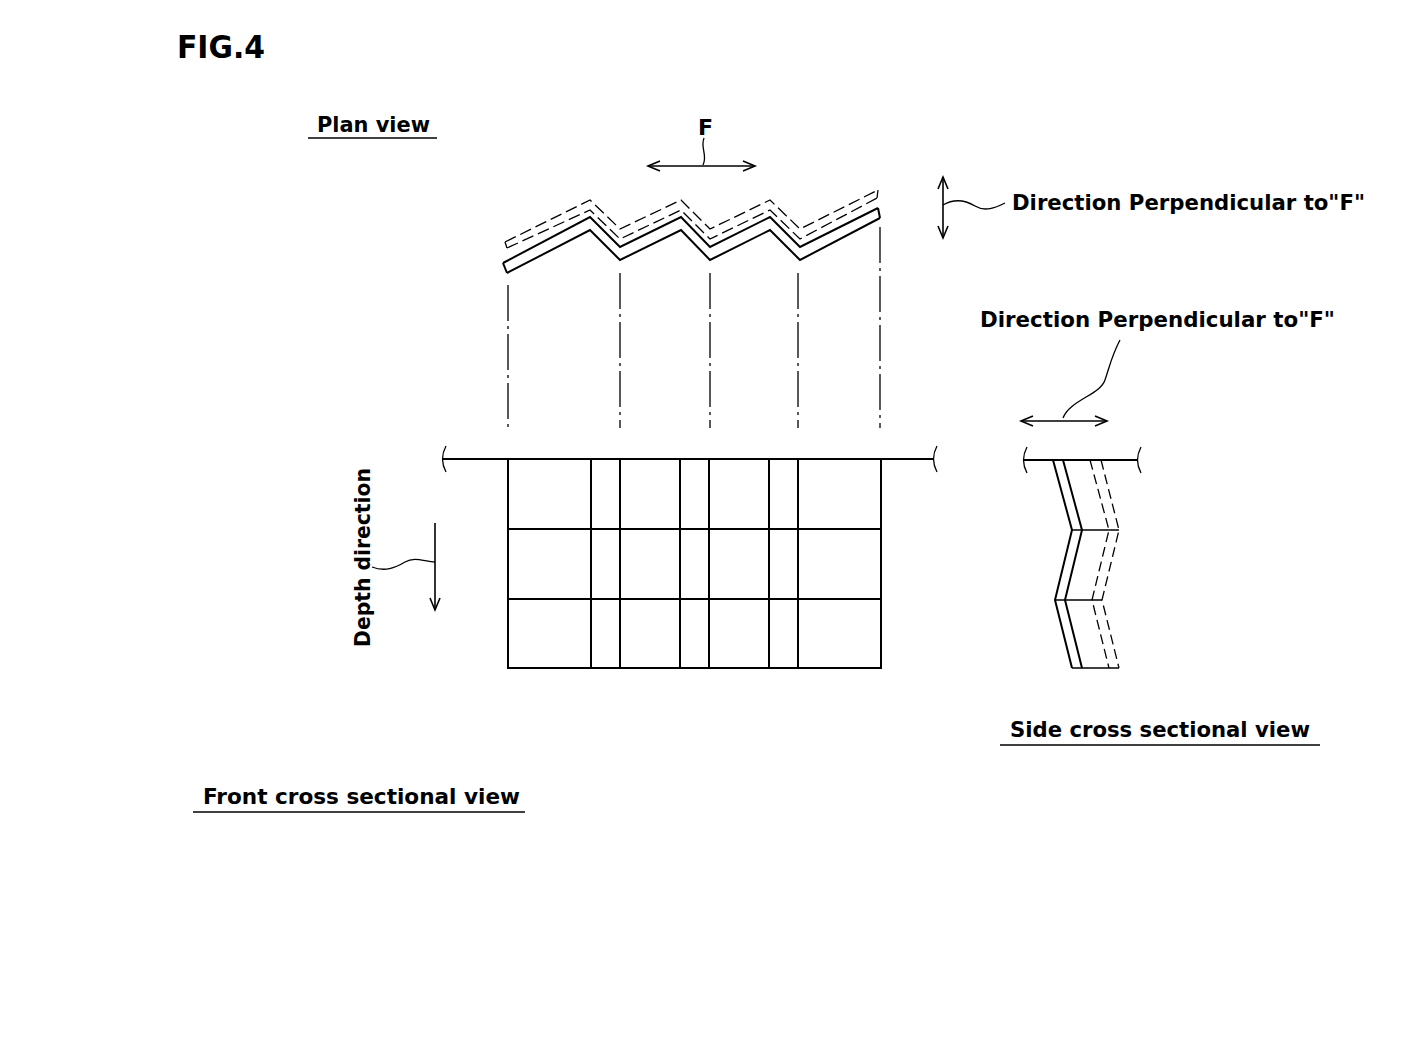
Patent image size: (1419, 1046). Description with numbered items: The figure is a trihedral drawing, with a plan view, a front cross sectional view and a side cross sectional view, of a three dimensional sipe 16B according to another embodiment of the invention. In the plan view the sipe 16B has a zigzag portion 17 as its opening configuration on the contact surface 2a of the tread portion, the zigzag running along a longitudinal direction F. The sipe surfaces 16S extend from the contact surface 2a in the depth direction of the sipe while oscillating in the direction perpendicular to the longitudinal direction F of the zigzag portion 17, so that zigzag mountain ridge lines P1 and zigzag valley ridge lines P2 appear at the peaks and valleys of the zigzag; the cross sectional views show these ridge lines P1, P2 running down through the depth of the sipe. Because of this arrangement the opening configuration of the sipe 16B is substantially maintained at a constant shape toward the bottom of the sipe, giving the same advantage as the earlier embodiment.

The three dimensional sipe 16B is at (788, 445).
The zigzag portion 17 is at (548, 258).
The sipe surfaces 16S is at (525, 490).
The contact surface 2a is at (905, 459).
The zigzag mountain ridge line P1 is at (798, 260).
The zigzag valley ridge line P2 is at (772, 217).